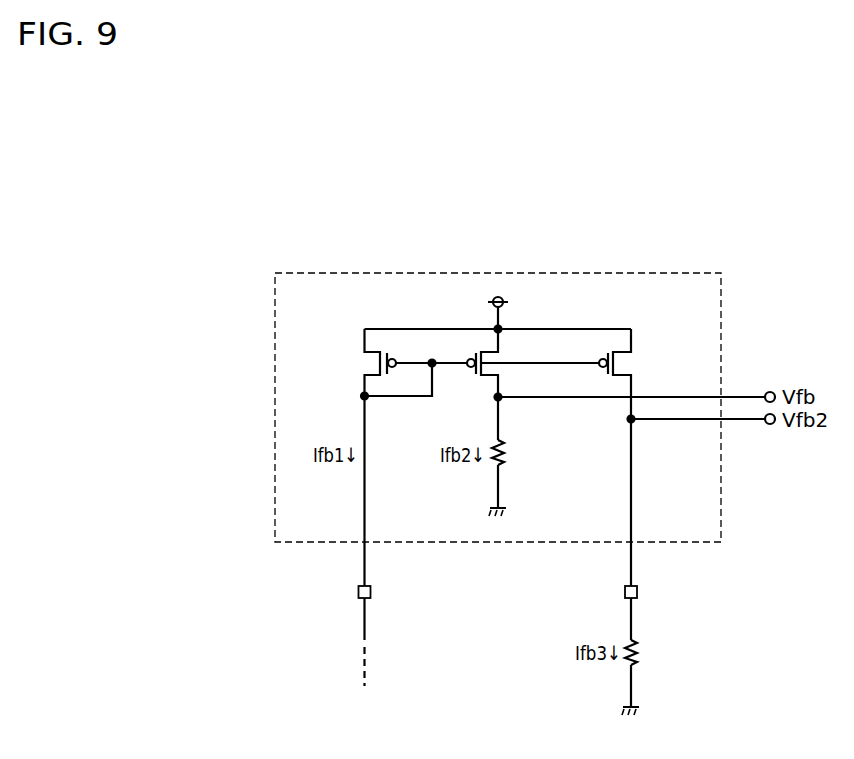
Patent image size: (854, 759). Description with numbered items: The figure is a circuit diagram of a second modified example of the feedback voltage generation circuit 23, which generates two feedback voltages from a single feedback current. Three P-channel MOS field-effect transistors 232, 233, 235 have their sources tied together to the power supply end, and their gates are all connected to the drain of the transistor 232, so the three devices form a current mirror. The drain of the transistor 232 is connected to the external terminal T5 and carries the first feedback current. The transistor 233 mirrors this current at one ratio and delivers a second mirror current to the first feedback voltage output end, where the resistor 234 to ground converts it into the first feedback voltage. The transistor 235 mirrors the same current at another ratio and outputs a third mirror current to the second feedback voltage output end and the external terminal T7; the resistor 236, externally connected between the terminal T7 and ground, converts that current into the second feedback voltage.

The feedback voltage generation circuit 23 is at (498, 273).
The P-channel type MOS field-effect transistor 232 is at (361, 364).
The P-channel type MOS field-effect transistor 233 is at (481, 378).
The resistor 234 is at (507, 454).
The P-channel type MOS field-effect transistor 235 is at (632, 363).
The resistor 236 is at (639, 654).
The external terminal T5 is at (372, 592).
The external terminal T7 is at (639, 592).